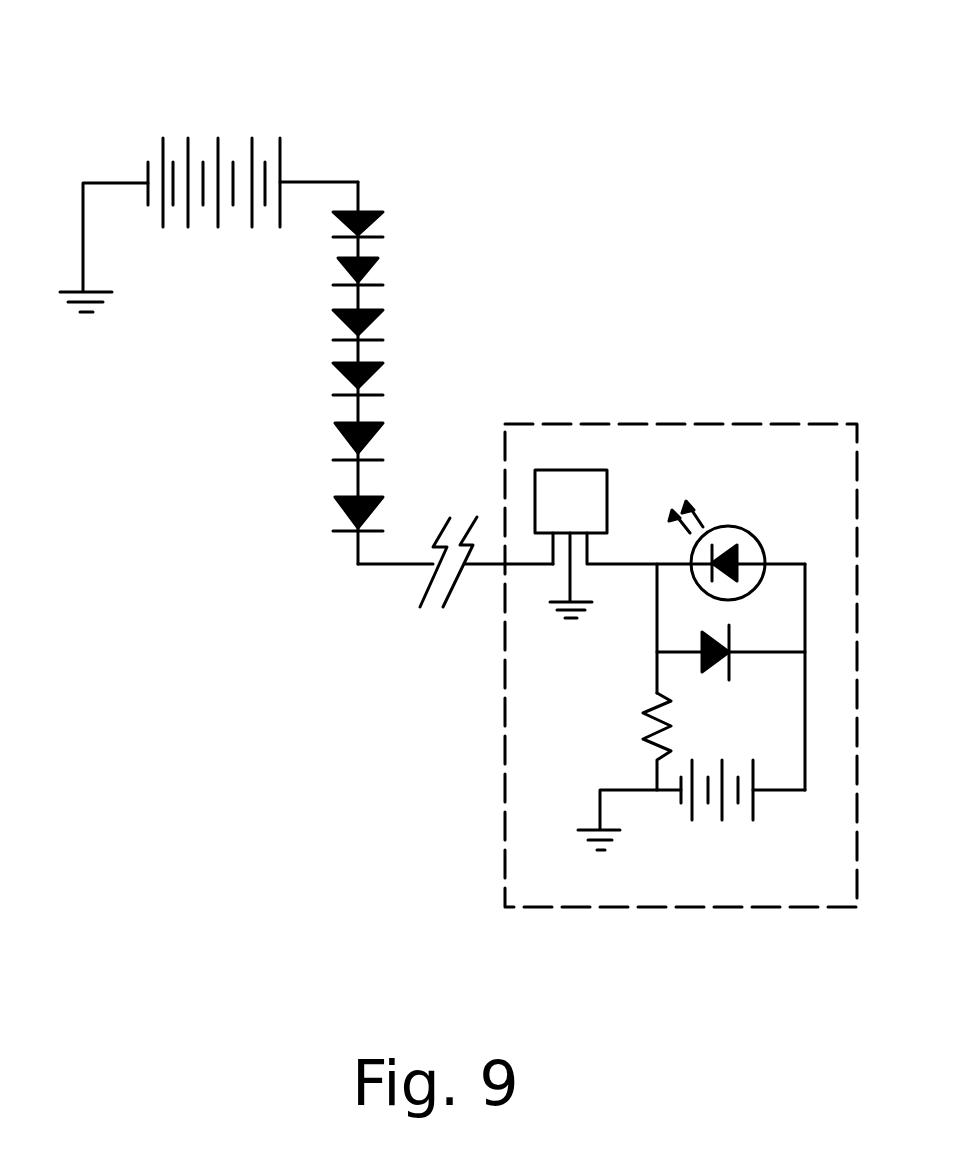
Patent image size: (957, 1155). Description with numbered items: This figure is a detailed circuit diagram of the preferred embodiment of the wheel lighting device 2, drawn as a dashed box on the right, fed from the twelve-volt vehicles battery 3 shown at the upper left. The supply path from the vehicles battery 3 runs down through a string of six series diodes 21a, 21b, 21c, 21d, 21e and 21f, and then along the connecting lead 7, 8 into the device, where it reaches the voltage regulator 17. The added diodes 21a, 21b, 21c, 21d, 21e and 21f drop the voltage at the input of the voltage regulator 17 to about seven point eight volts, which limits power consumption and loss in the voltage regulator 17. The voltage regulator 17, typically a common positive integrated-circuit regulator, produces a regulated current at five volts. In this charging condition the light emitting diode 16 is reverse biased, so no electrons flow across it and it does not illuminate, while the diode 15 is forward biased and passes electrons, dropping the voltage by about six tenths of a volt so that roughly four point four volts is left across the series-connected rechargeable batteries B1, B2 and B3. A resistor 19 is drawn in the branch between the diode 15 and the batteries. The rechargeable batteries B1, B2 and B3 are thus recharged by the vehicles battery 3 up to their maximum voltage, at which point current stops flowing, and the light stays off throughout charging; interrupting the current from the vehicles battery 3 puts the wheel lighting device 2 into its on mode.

The vehicles battery 3 is at (217, 110).
The wheel lighting device 2 is at (704, 395).
The supply wire 7 is at (429, 611).
The supply wire 8 is at (455, 576).
The voltage regulator 17 is at (575, 487).
The light emitting diode 16 is at (743, 536).
The diode 15 is at (740, 663).
The resistor 19 is at (638, 725).
The diode 21a is at (383, 220).
The diode 21b is at (382, 273).
The diode 21c is at (383, 323).
The diode 21d is at (387, 380).
The diode 21e is at (338, 445).
The diode 21f is at (338, 515).
The rechargeable battery B1 is at (678, 813).
The rechargeable battery B2 is at (710, 815).
The rechargeable battery B3 is at (757, 815).